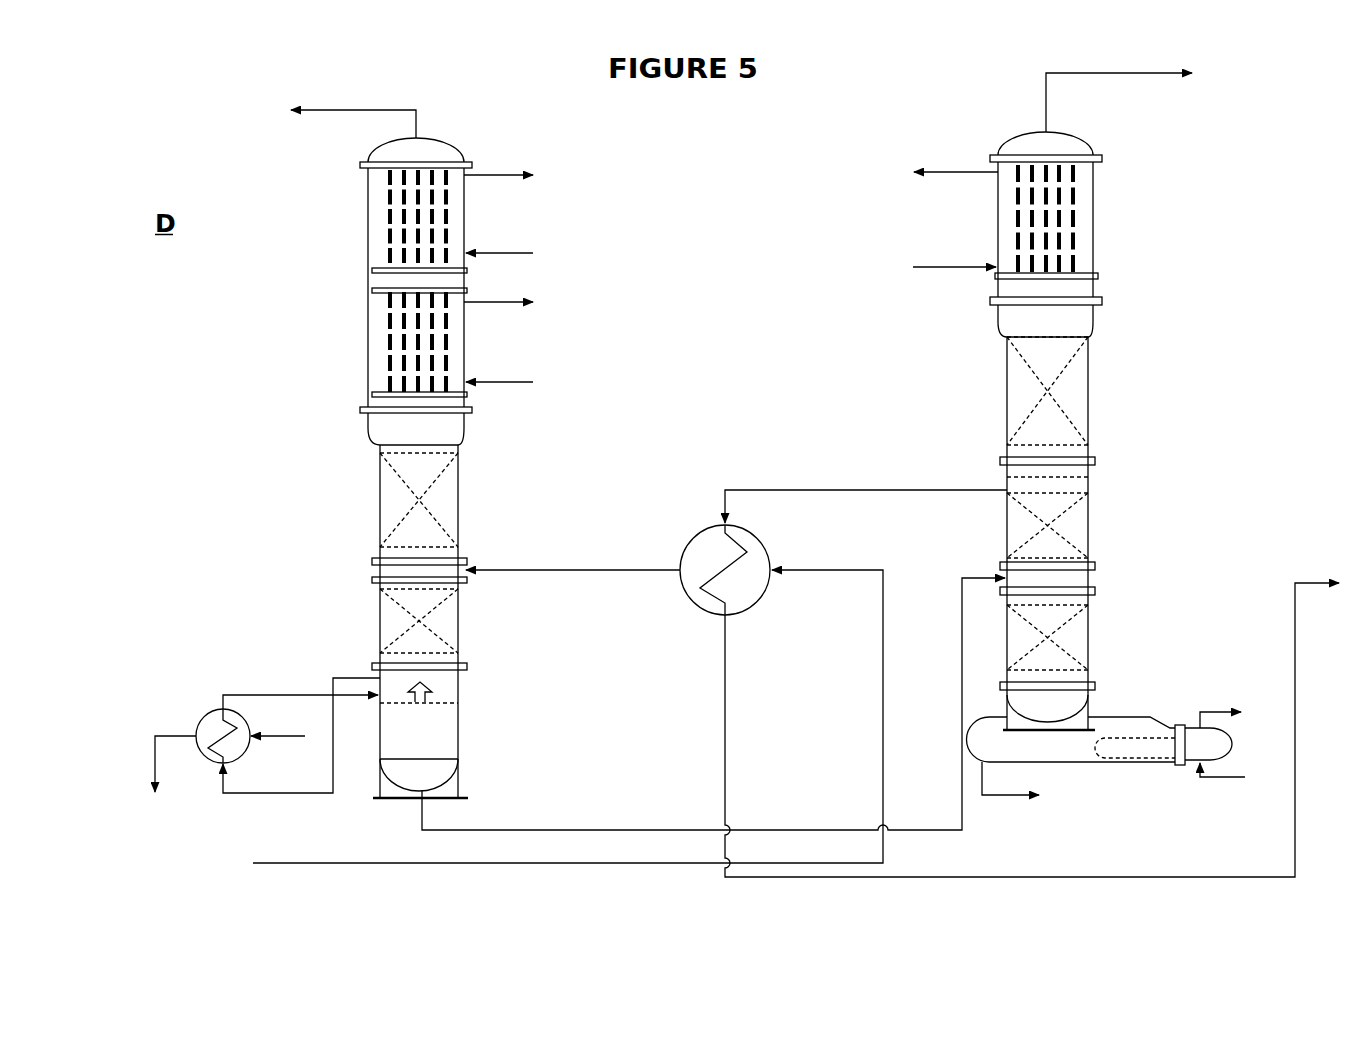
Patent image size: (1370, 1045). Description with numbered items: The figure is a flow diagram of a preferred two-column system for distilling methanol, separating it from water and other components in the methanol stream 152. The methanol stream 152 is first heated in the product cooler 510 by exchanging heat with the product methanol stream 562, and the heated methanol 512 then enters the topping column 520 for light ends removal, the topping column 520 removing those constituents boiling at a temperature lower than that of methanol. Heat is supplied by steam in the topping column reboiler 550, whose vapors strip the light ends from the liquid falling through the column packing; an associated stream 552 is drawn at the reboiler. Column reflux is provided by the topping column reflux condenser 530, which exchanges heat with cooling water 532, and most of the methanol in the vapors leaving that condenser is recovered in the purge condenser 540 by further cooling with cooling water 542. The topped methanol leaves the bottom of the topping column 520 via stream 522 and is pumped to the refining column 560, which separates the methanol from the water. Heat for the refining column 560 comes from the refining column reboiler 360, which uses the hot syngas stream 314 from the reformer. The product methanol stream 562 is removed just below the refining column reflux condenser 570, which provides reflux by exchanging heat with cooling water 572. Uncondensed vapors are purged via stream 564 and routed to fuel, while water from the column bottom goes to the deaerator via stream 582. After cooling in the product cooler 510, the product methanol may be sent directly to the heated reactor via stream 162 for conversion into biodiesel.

The methanol stream 152 is at (540, 866).
The stream 162 is at (1318, 578).
The hot syngas stream 314 is at (1203, 780).
The refining column reboiler 360 is at (1121, 712).
The product cooler 510 is at (687, 547).
The heated methanol 512 is at (600, 566).
The topping column 520 is at (377, 510).
The stream 522 is at (592, 825).
The topping column reflux condenser 530 is at (366, 350).
The cooling water 532 is at (503, 380).
The purge condenser 540 is at (366, 222).
The cooling water 542 is at (503, 250).
The topping column reboiler 550 is at (198, 717).
The purge stream 552 is at (160, 754).
The refining column 560 is at (1091, 440).
The product methanol stream 562 is at (898, 486).
The stream 564 is at (1092, 77).
The refining column reflux condenser 570 is at (1097, 217).
The cooling water 572 is at (952, 270).
The stream 582 is at (1010, 799).